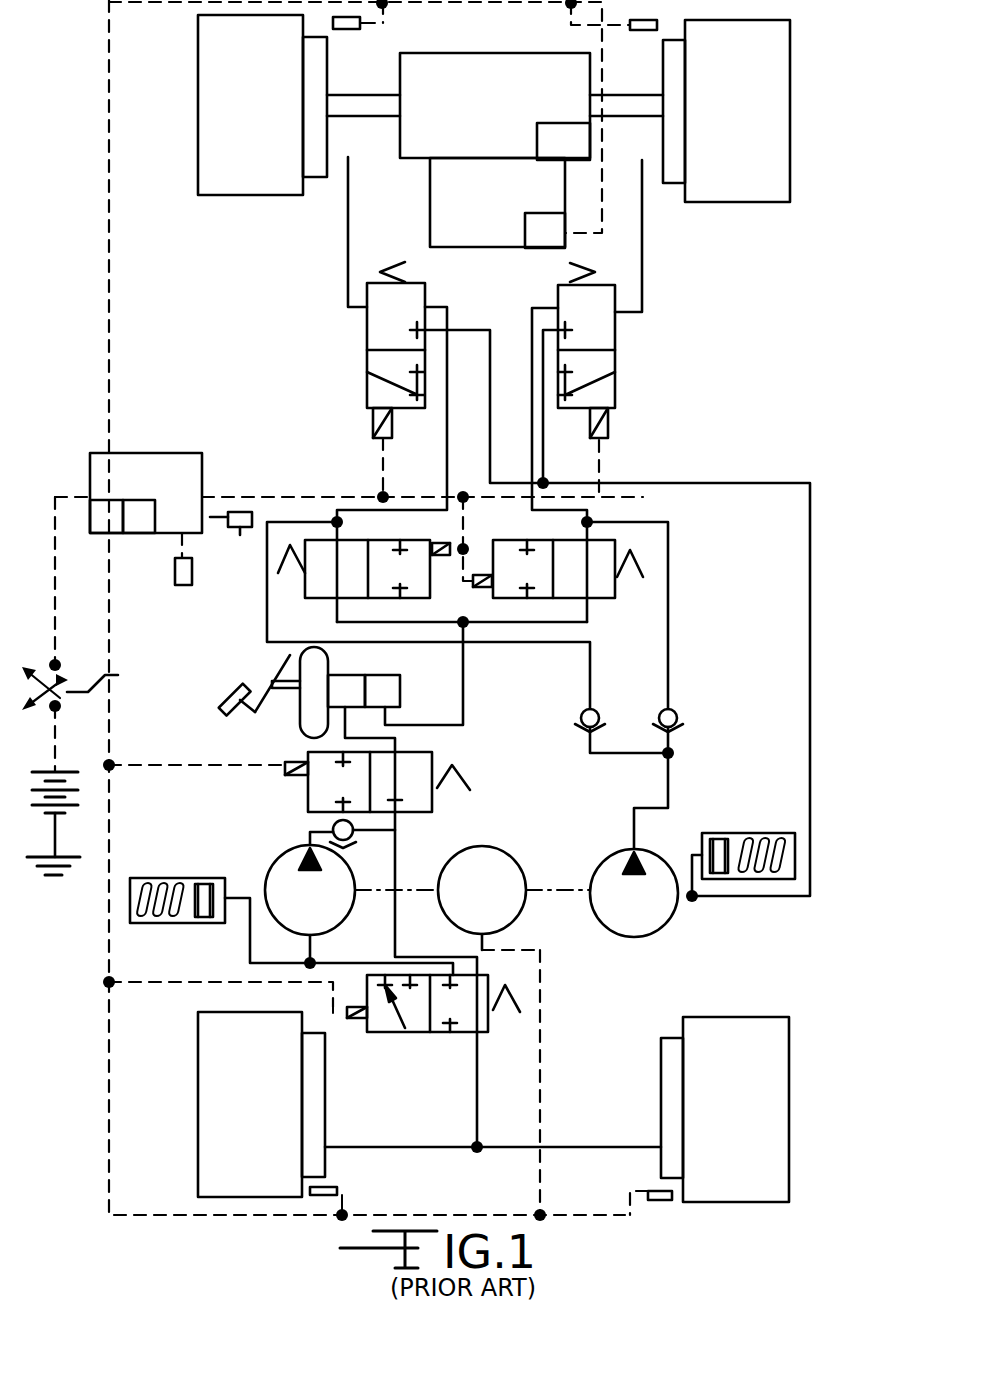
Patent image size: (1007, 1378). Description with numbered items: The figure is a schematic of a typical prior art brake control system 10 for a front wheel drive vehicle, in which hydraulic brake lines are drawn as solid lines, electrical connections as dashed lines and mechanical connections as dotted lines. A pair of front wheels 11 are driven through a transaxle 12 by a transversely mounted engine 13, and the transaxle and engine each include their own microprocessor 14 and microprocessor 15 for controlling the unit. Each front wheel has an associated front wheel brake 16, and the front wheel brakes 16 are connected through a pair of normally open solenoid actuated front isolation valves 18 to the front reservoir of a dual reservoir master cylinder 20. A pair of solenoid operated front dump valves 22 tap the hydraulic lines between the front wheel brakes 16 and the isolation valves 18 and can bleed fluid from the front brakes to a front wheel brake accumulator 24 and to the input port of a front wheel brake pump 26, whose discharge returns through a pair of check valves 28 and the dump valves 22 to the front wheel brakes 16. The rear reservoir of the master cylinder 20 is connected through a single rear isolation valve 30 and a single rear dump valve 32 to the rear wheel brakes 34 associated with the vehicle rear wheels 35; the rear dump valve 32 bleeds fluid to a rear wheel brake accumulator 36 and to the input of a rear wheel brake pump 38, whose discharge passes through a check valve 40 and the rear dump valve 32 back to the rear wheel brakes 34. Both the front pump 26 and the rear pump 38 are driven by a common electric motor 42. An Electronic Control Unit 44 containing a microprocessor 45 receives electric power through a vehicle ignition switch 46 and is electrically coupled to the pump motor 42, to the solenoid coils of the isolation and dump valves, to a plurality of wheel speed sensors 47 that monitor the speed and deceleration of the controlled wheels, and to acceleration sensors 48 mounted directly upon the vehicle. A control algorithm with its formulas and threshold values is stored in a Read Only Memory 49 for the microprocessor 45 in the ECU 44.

The brake control system 10 is at (813, 49).
The front wheels 11 is at (230, 180).
The transaxle 12 is at (495, 105).
The engine 13 is at (497, 202).
The microprocessor 14 is at (563, 141).
The microprocessor 15 is at (545, 230).
The front wheel brakes 16 is at (328, 160).
The front isolation valves 18 is at (375, 540).
The dual reservoir master cylinder 20 is at (388, 672).
The front dump valves 22 is at (410, 280).
The front wheel brake accumulator 24 is at (770, 833).
The front wheel brake pump 26 is at (618, 928).
The check valves 28 is at (582, 712).
The rear isolation valve 30 is at (432, 752).
The rear dump valve 32 is at (490, 1024).
The rear wheel brakes 34 is at (316, 1103).
The rear wheels 35 is at (205, 1075).
The rear wheel brake accumulator 36 is at (160, 878).
The rear wheel brake pump 38 is at (292, 862).
The check valve 40 is at (333, 826).
The electric motor 42 is at (470, 850).
The Electronic Control Unit 44 is at (162, 464).
The microprocessor 45 is at (93, 522).
The vehicle ignition switch 46 is at (85, 686).
The wheel speed sensors 47 is at (345, 30).
The acceleration sensors 48 is at (186, 572).
The Read Only Memory 49 is at (144, 520).